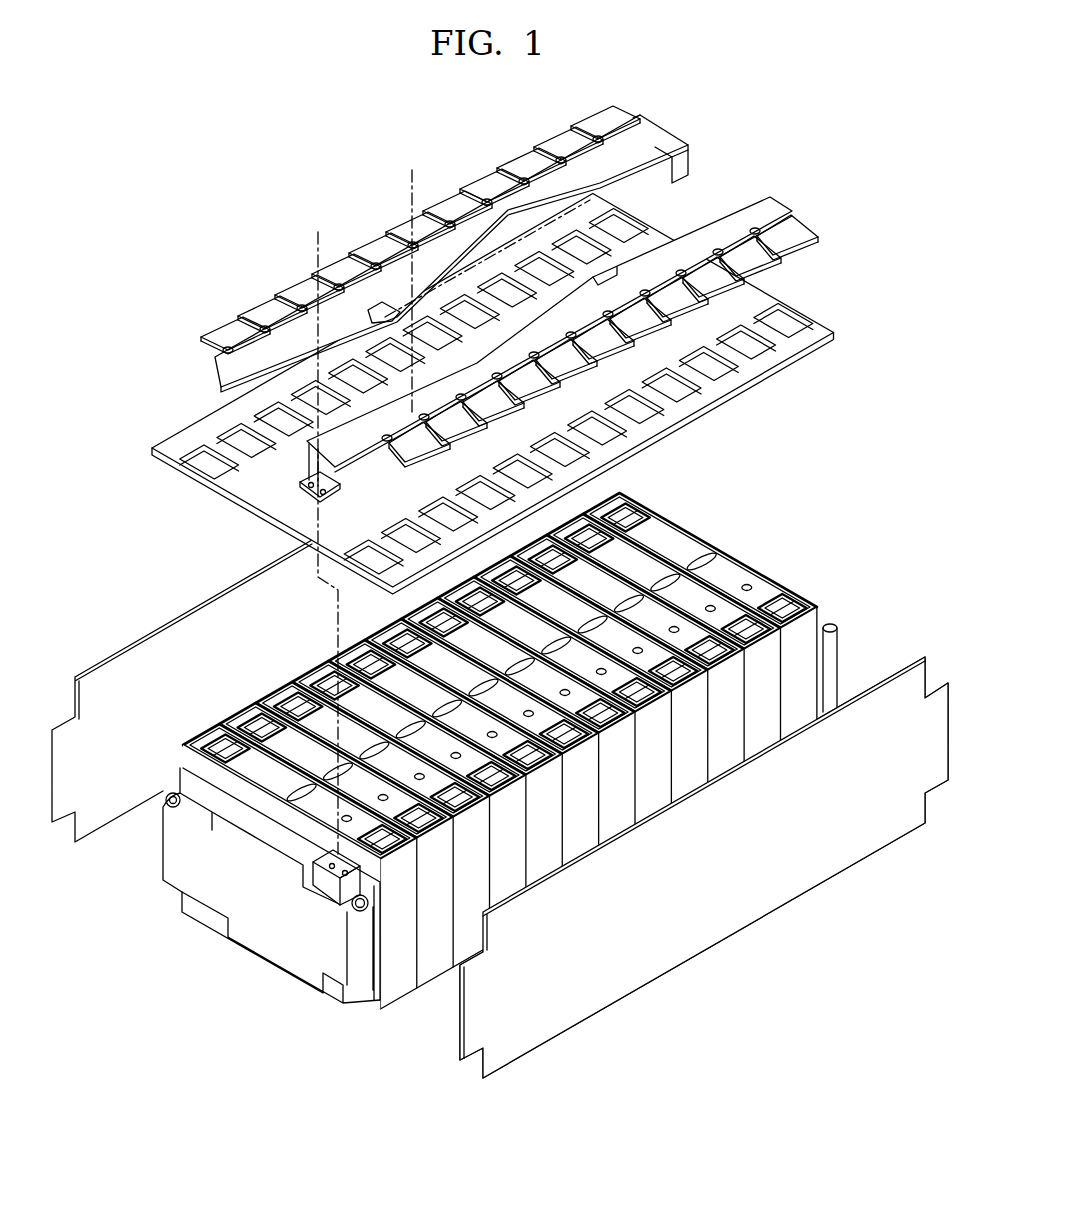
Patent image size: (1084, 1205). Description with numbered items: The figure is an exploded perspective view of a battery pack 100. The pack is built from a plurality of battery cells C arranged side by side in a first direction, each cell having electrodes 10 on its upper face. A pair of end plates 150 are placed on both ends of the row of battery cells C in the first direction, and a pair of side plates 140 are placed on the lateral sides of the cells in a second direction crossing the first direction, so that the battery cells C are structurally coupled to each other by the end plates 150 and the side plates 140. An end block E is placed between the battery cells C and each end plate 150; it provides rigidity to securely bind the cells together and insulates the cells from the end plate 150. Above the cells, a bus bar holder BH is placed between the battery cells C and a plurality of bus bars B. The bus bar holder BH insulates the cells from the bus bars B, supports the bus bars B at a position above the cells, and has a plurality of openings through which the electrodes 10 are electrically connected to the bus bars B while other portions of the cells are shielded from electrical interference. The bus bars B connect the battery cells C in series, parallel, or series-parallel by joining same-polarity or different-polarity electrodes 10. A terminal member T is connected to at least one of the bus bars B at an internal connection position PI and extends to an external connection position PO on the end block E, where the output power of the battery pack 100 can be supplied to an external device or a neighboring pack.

The battery pack 100 is at (146, 212).
The electrode 10 is at (377, 842).
The battery cell C is at (397, 983).
The end block E is at (256, 822).
The side plate 140 is at (163, 625).
The end plate 150 is at (232, 893).
The bus bar B is at (550, 141).
The bus bar holder BH is at (788, 295).
The terminal member T is at (303, 441).
The internal connection position PI is at (409, 275).
The external connection position PO is at (320, 524).